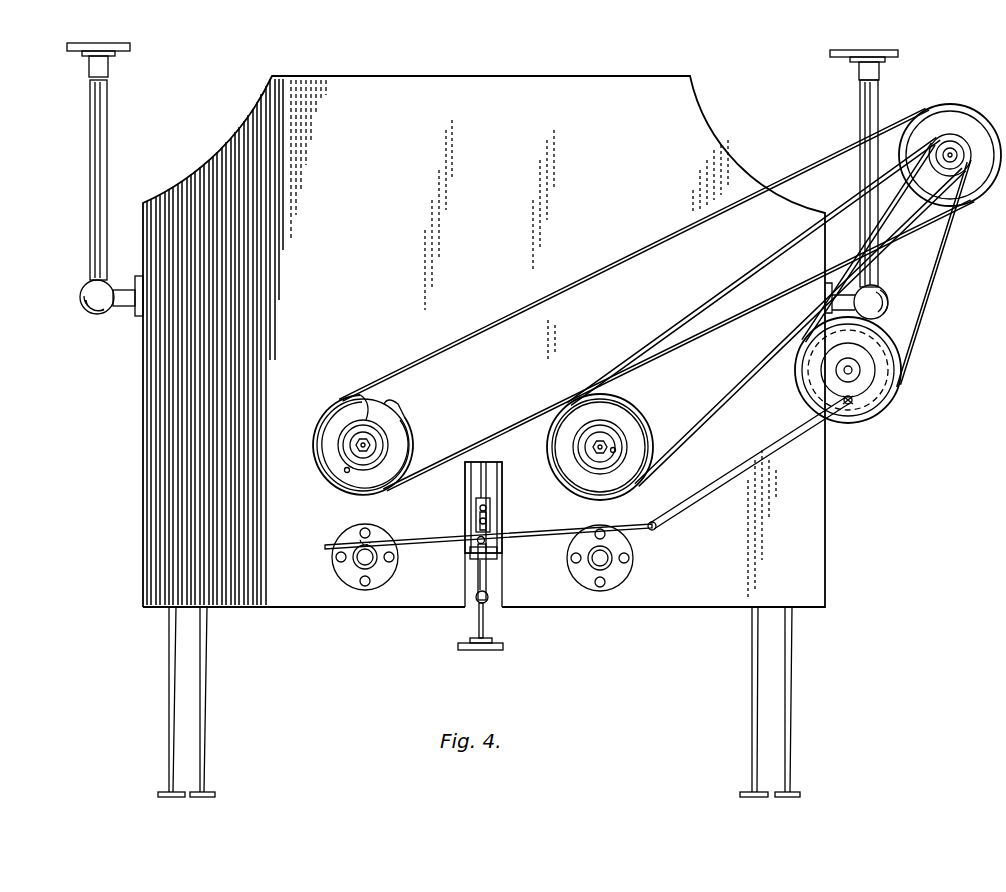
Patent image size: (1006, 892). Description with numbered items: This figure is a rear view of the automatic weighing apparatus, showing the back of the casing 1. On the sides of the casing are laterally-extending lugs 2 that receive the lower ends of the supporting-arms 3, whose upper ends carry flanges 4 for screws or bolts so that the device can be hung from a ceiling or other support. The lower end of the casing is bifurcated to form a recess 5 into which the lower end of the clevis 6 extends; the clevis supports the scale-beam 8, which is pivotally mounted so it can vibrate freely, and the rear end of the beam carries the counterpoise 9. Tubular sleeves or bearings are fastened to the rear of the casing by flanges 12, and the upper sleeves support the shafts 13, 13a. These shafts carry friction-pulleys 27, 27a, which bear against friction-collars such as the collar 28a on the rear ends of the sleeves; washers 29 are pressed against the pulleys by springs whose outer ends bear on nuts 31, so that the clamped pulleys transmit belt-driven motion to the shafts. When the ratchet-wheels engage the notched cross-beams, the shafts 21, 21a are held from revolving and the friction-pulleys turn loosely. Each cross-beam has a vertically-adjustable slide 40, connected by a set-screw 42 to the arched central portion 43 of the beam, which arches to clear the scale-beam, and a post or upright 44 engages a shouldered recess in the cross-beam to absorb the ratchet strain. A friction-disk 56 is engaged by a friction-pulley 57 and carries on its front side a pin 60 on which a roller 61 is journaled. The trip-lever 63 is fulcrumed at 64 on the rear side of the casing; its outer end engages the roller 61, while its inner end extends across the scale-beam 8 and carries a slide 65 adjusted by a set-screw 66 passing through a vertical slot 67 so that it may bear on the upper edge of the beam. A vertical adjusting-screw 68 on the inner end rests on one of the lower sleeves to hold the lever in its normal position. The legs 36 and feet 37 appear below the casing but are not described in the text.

The casing 1 is at (500, 181).
The laterally-extending lugs 2 is at (88, 302).
The supporting-arms 3 is at (90, 226).
The flanges 4 is at (72, 50).
The recess 5 is at (500, 463).
The clevis 6 is at (497, 488).
The scale-beam 8 is at (482, 478).
The counterpoise 9 is at (476, 648).
The flanges 12 is at (345, 573).
The shaft 13 is at (603, 445).
The shaft 13a is at (365, 445).
The shaft 21 is at (632, 565).
The shaft 21a is at (372, 562).
The friction-pulley 27 is at (590, 482).
The friction-pulley 27a is at (338, 476).
The friction-collar 28a is at (384, 420).
The washers 29 is at (345, 437).
The nuts 31 is at (362, 452).
The leg 36 is at (480, 699).
The foot 37 is at (175, 797).
The vertically-adjustable slide 40 is at (476, 502).
The set-screw 42 is at (479, 520).
The arched central portions 43 is at (490, 515).
The post or upright 44 is at (488, 508).
The friction-disk 56 is at (898, 388).
The friction-pulley 57 is at (882, 412).
The pin 60 is at (846, 404).
The roller 61 is at (856, 404).
The trip-lever 63 is at (735, 485).
The fulcrum 64 is at (656, 529).
The slide 65 is at (460, 534).
The set-screw 66 is at (490, 541).
The vertical slot 67 is at (492, 560).
The vertical adjusting-screw 68 is at (373, 540).